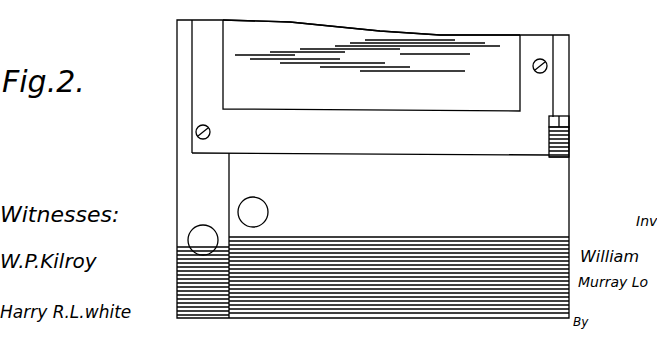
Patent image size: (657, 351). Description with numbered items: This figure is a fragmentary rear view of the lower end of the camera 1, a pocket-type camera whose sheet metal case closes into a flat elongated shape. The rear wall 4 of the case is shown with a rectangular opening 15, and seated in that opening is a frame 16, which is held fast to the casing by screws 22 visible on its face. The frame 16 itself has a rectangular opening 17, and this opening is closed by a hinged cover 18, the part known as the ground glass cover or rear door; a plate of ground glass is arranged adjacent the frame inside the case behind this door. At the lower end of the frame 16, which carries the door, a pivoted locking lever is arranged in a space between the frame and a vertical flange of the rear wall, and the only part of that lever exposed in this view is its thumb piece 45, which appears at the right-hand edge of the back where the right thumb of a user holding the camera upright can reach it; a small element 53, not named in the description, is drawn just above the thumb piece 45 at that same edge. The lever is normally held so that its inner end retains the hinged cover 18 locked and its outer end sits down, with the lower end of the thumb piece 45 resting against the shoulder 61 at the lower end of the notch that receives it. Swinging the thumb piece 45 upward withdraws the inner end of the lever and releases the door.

The camera 1 is at (177, 181).
The rear wall 4 is at (194, 167).
The rectangular opening 15 is at (196, 148).
The frame 16 is at (197, 67).
The rectangular opening 17 is at (228, 27).
The hinged cover 18 is at (280, 25).
The screws 22 is at (195, 131).
The thumb piece 45 is at (571, 133).
The nut head 53 is at (558, 122).
The shoulder 61 is at (571, 160).